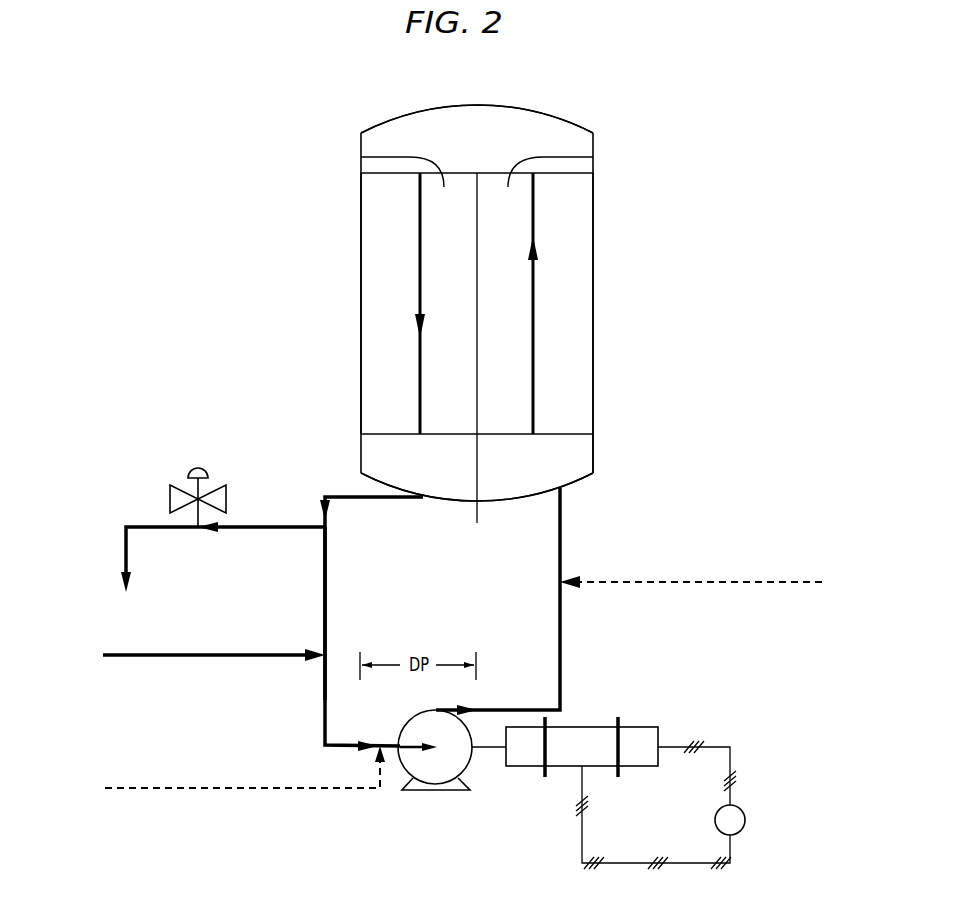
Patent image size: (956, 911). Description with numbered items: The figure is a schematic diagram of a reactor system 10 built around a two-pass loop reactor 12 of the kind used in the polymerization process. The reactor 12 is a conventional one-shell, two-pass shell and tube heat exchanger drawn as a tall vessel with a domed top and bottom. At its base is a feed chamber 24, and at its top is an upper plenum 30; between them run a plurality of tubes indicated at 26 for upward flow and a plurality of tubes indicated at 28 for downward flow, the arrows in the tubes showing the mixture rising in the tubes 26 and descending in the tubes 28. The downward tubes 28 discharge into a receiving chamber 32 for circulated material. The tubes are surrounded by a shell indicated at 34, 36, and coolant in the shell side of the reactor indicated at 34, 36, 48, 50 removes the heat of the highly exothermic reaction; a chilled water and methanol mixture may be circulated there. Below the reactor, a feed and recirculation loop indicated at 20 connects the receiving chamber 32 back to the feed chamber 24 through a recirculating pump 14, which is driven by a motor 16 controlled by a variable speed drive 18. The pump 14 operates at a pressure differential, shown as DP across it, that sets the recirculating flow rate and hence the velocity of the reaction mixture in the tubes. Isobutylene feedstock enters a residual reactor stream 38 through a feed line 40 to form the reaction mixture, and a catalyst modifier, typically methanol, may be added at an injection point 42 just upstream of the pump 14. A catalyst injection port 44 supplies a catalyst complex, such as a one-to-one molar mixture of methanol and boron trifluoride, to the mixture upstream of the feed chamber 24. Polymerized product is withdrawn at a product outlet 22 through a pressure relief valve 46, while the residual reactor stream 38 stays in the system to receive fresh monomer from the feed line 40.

The reactor system 10 is at (176, 336).
The two-pass loop reactor 12 is at (602, 283).
The recirculating pump 14 is at (470, 765).
The motor 16 is at (634, 727).
The variable speed drive 18 is at (742, 810).
The feed and recirculation loop 20 is at (578, 527).
The product outlet 22 is at (128, 560).
The feed chamber 24 is at (582, 459).
The tubes for upward flow 26 is at (533, 390).
The tubes for downward flow 28 is at (420, 243).
The upper plenum 30 is at (516, 117).
The receiving chamber 32 is at (368, 459).
The shell 34 is at (582, 221).
The shell 36 is at (368, 221).
The residual reactor stream 38 is at (330, 557).
The feed line 40 is at (228, 655).
The catalyst modifier injection point 42 is at (265, 790).
The catalyst injection port 44 is at (805, 582).
The pressure relief valve 46 is at (170, 500).
The shell side coolant section 48 is at (593, 157).
The shell side coolant section 50 is at (361, 157).